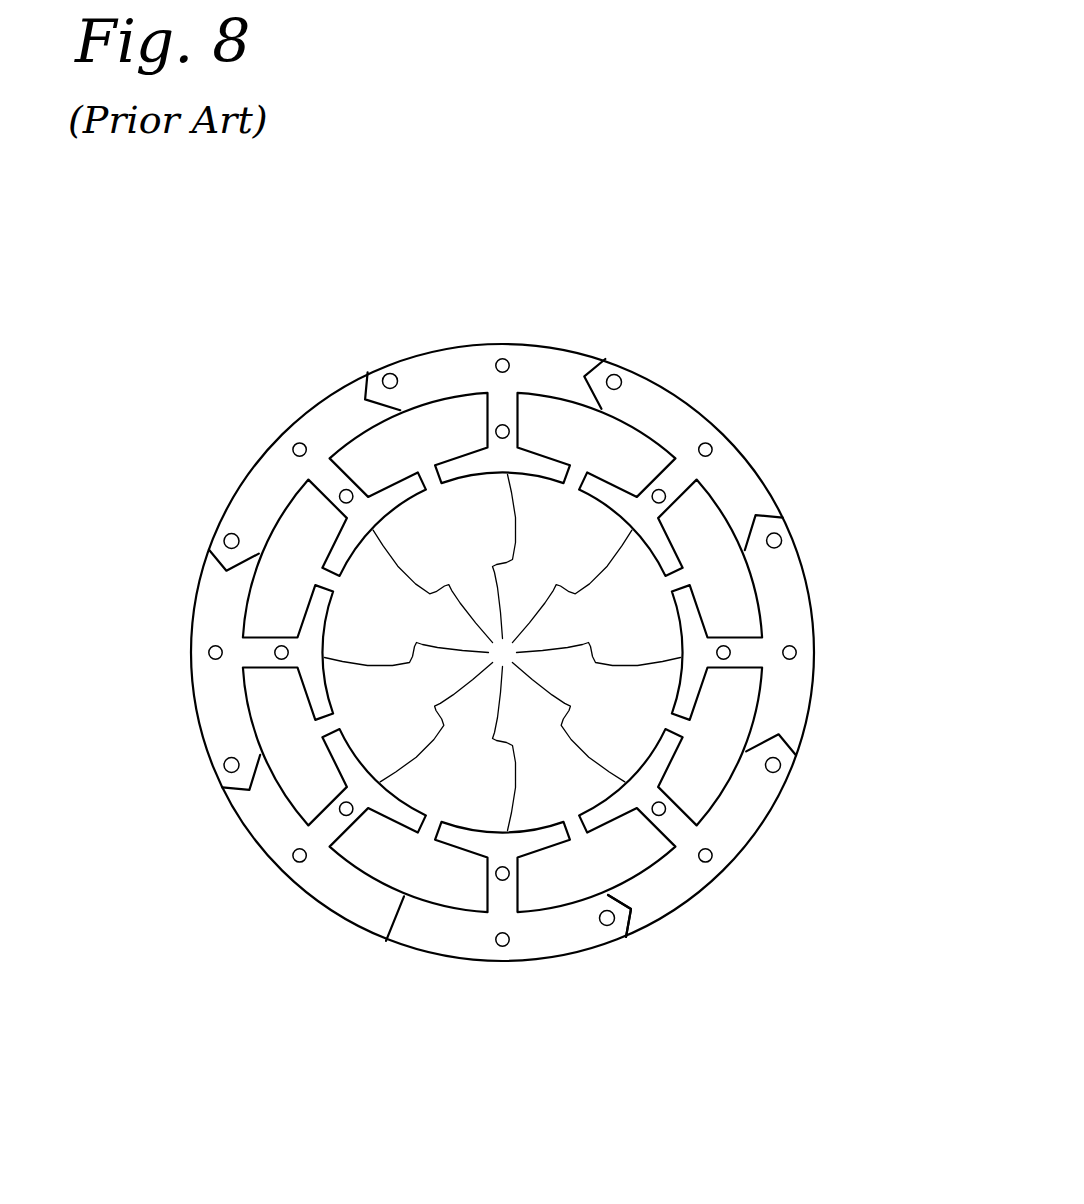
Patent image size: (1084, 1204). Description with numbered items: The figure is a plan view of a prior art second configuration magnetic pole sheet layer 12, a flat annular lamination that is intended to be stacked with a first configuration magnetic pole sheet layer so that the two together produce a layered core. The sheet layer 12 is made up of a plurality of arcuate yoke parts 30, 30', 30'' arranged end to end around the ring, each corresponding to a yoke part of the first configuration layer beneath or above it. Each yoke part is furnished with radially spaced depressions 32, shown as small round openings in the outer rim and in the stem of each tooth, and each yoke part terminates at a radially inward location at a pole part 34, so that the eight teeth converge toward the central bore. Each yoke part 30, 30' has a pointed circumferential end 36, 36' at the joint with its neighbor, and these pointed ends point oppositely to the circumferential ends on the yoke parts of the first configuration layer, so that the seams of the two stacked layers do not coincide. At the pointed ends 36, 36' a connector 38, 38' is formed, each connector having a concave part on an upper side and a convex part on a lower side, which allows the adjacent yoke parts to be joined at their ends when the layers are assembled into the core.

The second configuration magnetic pole sheet layer 12 is at (811, 578).
The arcuate yoke part 30 is at (492, 618).
The arcuate yoke part 30' is at (527, 971).
The arcuate yoke part 30'' is at (228, 918).
The depression 32 is at (504, 425).
The pole part 34 is at (503, 653).
The pointed circumferential end 36 is at (492, 577).
The pointed circumferential end 36' is at (630, 978).
The connector 38 is at (492, 580).
The connector 38' is at (580, 987).